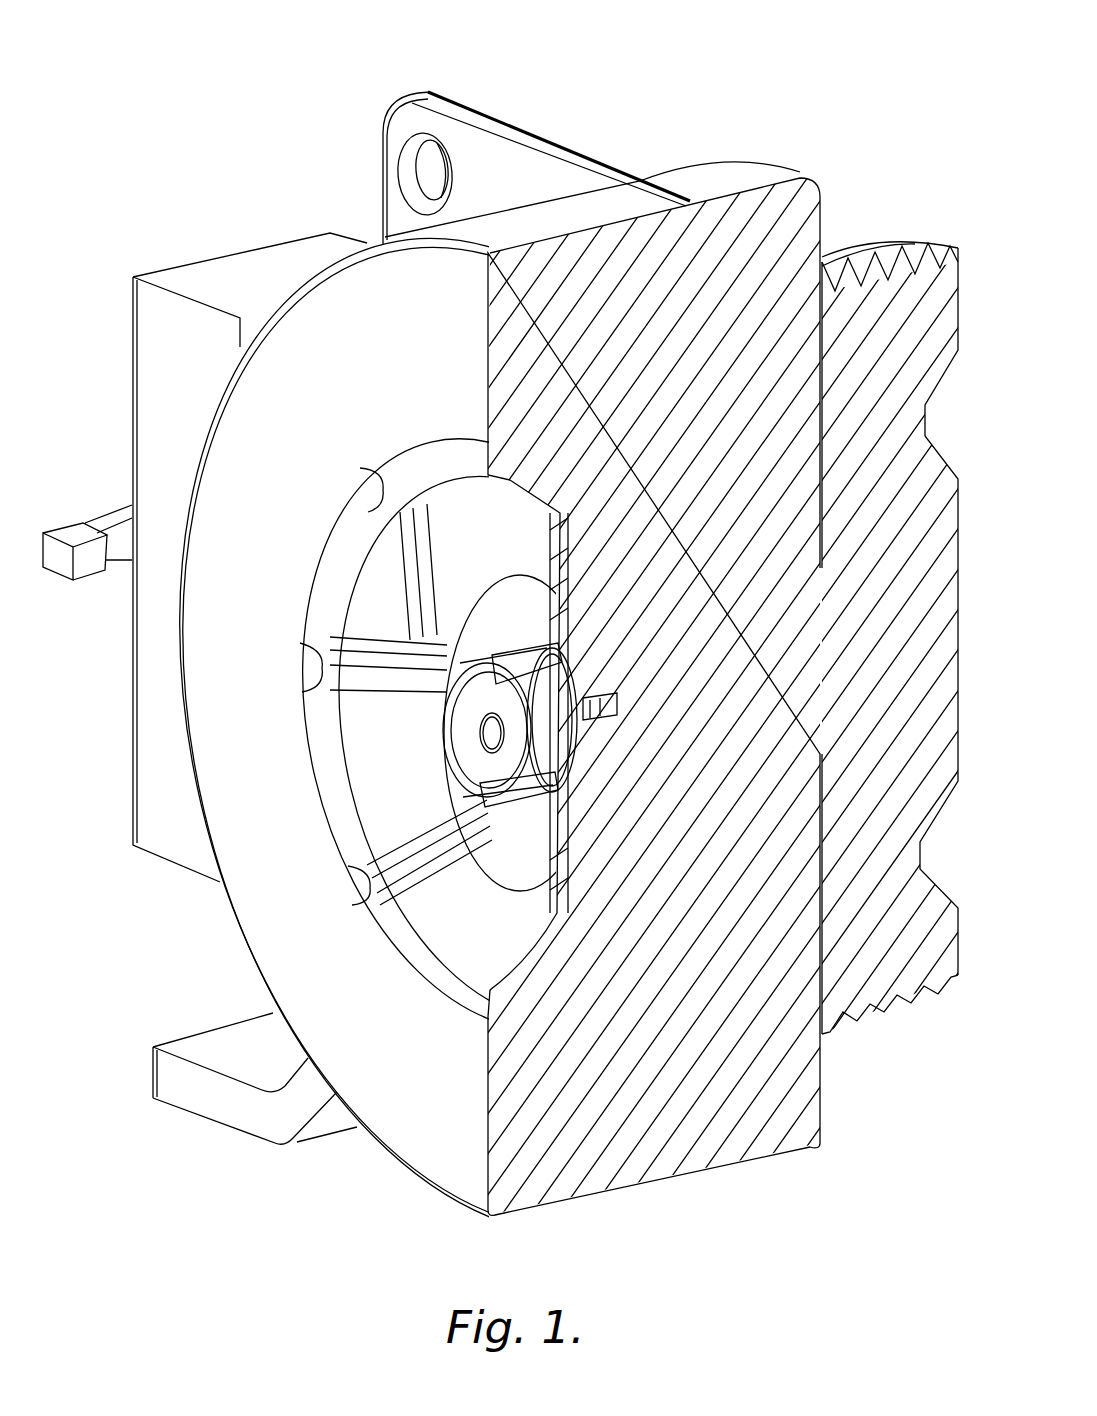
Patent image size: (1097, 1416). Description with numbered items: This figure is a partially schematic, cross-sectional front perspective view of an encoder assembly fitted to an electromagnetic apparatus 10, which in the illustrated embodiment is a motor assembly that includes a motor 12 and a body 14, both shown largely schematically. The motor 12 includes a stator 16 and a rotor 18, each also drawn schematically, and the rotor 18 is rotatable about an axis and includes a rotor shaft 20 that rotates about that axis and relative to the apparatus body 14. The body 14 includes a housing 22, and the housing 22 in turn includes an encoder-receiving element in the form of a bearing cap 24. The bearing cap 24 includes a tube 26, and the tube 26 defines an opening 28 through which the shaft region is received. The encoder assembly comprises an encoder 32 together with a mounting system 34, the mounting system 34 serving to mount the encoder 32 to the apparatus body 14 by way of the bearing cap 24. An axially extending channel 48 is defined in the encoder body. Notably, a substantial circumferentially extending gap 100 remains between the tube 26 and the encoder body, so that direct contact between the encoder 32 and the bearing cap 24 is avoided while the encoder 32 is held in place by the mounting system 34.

The electromagnetic apparatus 10 is at (737, 57).
The motor 12 is at (750, 310).
The body 14 is at (585, 205).
The stator 16 is at (751, 240).
The rotor 18 is at (697, 733).
The rotor shaft 20 is at (615, 715).
The housing 22 is at (328, 308).
The bearing cap 24 is at (442, 753).
The tube 26 is at (447, 687).
The opening 28 is at (465, 780).
The encoder 32 is at (537, 763).
The mounting system 34 is at (550, 647).
The channel 48 is at (500, 660).
The gap 100 is at (443, 713).